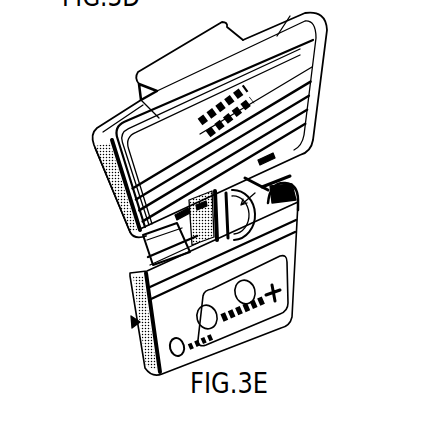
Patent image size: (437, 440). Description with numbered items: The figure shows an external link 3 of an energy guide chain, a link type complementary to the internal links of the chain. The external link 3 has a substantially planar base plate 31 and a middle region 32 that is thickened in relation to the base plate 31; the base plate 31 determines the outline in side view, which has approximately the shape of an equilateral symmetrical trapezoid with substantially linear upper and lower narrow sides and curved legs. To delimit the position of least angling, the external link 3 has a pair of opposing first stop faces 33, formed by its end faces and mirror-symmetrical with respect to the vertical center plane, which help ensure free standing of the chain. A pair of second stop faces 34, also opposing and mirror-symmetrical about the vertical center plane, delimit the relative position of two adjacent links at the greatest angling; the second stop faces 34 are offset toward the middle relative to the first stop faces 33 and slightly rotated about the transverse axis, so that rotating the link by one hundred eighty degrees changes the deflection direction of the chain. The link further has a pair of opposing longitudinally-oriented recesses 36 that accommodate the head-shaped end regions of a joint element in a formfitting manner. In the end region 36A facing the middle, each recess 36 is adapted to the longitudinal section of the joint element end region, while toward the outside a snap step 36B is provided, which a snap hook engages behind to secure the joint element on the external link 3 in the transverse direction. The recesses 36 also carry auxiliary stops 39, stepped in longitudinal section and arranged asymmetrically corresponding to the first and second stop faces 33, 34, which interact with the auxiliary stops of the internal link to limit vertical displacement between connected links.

The external link 3 is at (377, 85).
The base plate 31 is at (262, 87).
The middle region 32 is at (183, 44).
The first stop faces 33 is at (102, 184).
The second stop faces 34 is at (135, 325).
The recesses 36 is at (134, 243).
The end region 36A is at (292, 187).
The snap step 36B is at (132, 284).
The auxiliary stops 39 is at (288, 170).